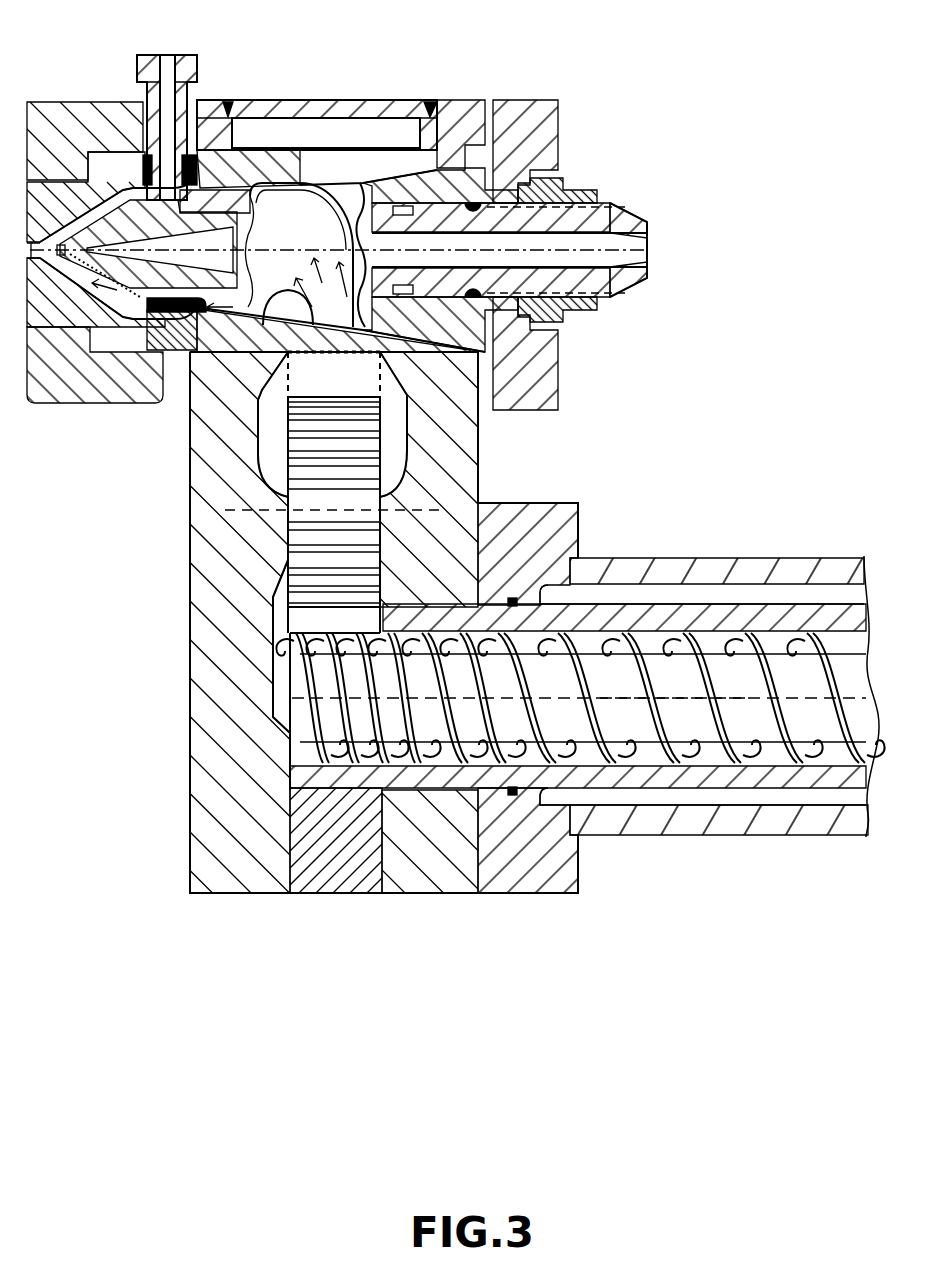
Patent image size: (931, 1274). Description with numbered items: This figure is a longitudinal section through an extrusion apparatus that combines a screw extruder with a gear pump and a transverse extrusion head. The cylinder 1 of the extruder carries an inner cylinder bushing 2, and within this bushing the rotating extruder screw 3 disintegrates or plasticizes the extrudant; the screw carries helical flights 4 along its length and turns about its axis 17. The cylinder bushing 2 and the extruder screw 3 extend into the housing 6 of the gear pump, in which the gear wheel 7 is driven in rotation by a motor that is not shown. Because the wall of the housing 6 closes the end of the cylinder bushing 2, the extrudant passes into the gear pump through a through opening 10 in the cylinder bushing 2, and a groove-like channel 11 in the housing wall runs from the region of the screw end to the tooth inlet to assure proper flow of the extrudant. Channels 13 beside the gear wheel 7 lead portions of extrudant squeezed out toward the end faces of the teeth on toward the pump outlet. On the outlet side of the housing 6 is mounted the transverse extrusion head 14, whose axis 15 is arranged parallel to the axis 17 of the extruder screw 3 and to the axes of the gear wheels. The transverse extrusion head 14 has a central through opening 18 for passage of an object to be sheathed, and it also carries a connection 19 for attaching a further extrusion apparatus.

The cylinder 1 is at (620, 567).
The cylinder bushing 2 is at (658, 607).
The extruder screw 3 is at (683, 670).
The screw flight 4 is at (760, 637).
The housing 6 is at (213, 675).
The gear wheel 7 is at (330, 457).
The through opening 10 is at (277, 508).
The channel 11 is at (280, 608).
The channels 13 is at (280, 438).
The transverse extrusion head 14 is at (285, 100).
The axis 15 is at (298, 245).
The axis 17 is at (676, 700).
The central through opening 18 is at (412, 243).
The connection 19 is at (197, 62).